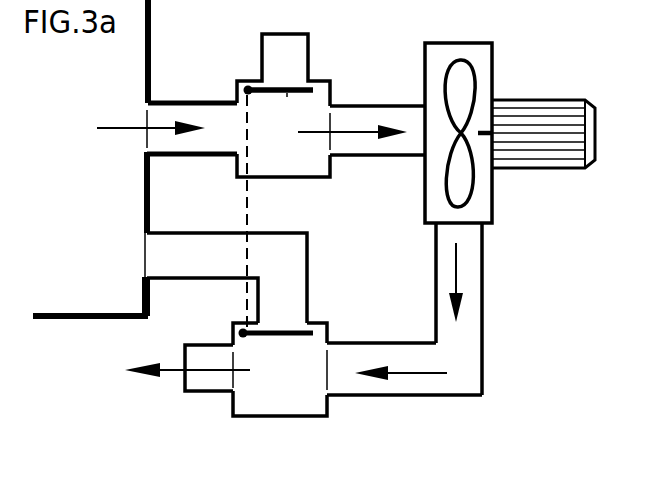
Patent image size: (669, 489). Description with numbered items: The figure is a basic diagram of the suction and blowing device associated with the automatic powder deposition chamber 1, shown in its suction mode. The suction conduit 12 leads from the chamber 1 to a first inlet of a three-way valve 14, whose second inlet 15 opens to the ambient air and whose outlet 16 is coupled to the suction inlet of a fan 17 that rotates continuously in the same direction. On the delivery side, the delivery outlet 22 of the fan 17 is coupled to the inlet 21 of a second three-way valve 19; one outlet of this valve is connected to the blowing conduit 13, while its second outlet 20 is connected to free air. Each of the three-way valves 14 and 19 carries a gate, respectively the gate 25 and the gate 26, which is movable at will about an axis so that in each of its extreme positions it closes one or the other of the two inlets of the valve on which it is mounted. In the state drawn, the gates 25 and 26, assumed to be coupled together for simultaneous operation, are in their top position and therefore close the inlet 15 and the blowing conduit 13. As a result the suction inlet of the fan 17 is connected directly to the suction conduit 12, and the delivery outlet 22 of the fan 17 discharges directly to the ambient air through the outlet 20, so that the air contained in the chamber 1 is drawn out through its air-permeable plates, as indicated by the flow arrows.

The automatic powder deposition chamber 1 is at (85, 318).
The suction conduit 12 is at (190, 108).
The blowing conduit 13 is at (192, 265).
The three-way valve 14 is at (333, 81).
The second inlet 15 is at (293, 86).
The outlet 16 is at (360, 107).
The fan 17 is at (482, 57).
The second three-way valve 19 is at (270, 417).
The second outlet 20 is at (203, 382).
The inlet 21 is at (328, 378).
The delivery outlet 22 is at (467, 223).
The gate 25 is at (287, 97).
The gate 26 is at (285, 338).